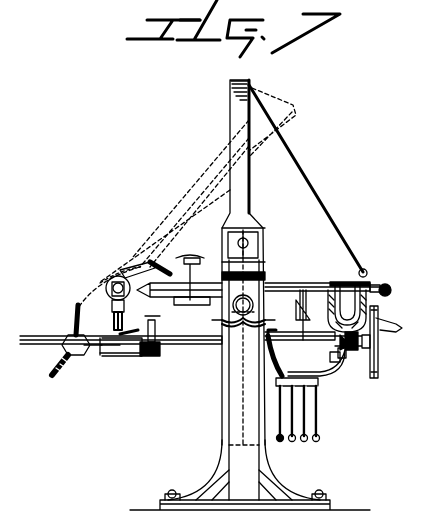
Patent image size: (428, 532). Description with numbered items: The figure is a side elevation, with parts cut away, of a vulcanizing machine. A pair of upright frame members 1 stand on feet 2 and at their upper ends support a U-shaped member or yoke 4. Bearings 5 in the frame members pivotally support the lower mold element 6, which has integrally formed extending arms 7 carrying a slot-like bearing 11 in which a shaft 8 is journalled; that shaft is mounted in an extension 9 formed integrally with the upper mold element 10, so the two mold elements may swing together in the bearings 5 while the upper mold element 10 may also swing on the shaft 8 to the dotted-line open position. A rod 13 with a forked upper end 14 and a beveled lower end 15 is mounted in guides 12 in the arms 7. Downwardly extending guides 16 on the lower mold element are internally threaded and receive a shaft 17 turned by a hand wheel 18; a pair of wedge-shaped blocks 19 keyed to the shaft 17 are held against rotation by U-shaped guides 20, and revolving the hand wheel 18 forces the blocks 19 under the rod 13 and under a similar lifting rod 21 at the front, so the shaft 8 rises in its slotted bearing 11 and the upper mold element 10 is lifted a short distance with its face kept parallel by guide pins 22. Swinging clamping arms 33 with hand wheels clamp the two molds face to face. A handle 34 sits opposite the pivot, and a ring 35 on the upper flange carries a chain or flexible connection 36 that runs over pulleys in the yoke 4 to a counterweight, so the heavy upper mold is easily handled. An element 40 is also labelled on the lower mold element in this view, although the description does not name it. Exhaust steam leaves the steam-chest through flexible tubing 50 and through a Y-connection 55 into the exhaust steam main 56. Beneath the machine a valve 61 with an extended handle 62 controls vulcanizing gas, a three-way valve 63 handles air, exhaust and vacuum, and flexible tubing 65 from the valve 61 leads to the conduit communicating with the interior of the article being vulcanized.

The upright frame member 1 is at (226, 418).
The foot 2 is at (290, 490).
The U-shaped member or yoke 4 is at (243, 128).
The bearing 5 is at (214, 320).
The lower mold element 6 is at (198, 322).
The extending arm 7 is at (136, 340).
The shaft 8 is at (110, 276).
The extension 9 is at (135, 268).
The upper mold element 10 is at (202, 268).
The slot-like bearing 11 is at (112, 306).
The guide 12 is at (74, 312).
The rod 13 is at (116, 318).
The forked upper end 14 is at (100, 283).
The beveled lower end 15 is at (128, 345).
The downwardly extending guide 16 is at (152, 343).
The shaft 17 is at (190, 348).
The hand wheel 18 is at (380, 358).
The wedge-shaped block 19 is at (112, 355).
The U-shaped guide 20 is at (100, 347).
The lifting rod 21 is at (345, 285).
The guide pin 22 is at (303, 290).
The swinging clamping arm 33 is at (165, 262).
The handle 34 is at (396, 273).
The ring 35 is at (366, 272).
The chain or flexible connection 36 is at (318, 192).
The slide 40 is at (240, 312).
The flexible tubing 50 is at (148, 357).
The Y-connection 55 is at (66, 347).
The exhaust steam main 56 is at (56, 374).
The valve 61 is at (318, 384).
The handle 62 is at (328, 372).
The three-way valve 63 is at (304, 372).
The flexible tubing 65 is at (268, 362).